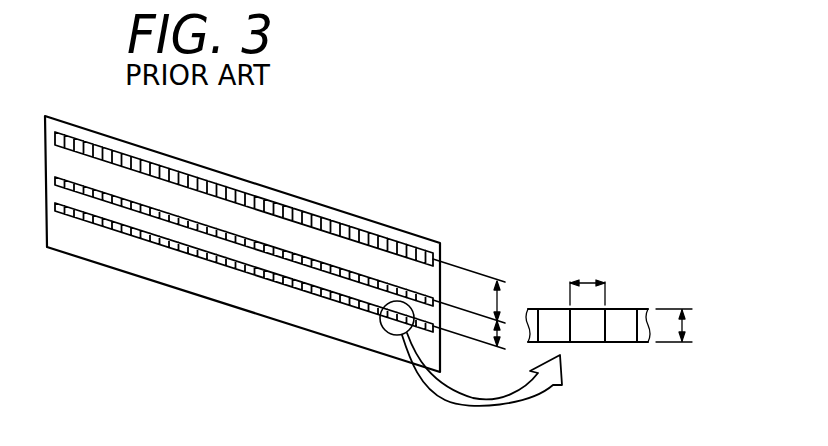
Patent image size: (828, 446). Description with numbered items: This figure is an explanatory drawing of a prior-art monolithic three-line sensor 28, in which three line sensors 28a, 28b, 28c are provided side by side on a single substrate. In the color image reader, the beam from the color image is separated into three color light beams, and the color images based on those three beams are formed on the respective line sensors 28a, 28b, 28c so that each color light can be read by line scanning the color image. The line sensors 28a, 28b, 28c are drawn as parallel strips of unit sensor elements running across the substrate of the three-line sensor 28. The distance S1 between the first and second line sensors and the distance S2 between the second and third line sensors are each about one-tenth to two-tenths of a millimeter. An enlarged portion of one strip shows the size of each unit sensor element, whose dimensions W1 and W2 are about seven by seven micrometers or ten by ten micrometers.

The monolithic 3-line sensor 28 is at (125, 272).
The line sensor 28a is at (252, 193).
The line sensor 28b is at (306, 256).
The line sensor 28c is at (357, 299).
The distance between line sensors S1 is at (498, 283).
The distance between line sensors S2 is at (497, 347).
The unit sensor element size W1 is at (588, 283).
The unit sensor element size W2 is at (681, 312).